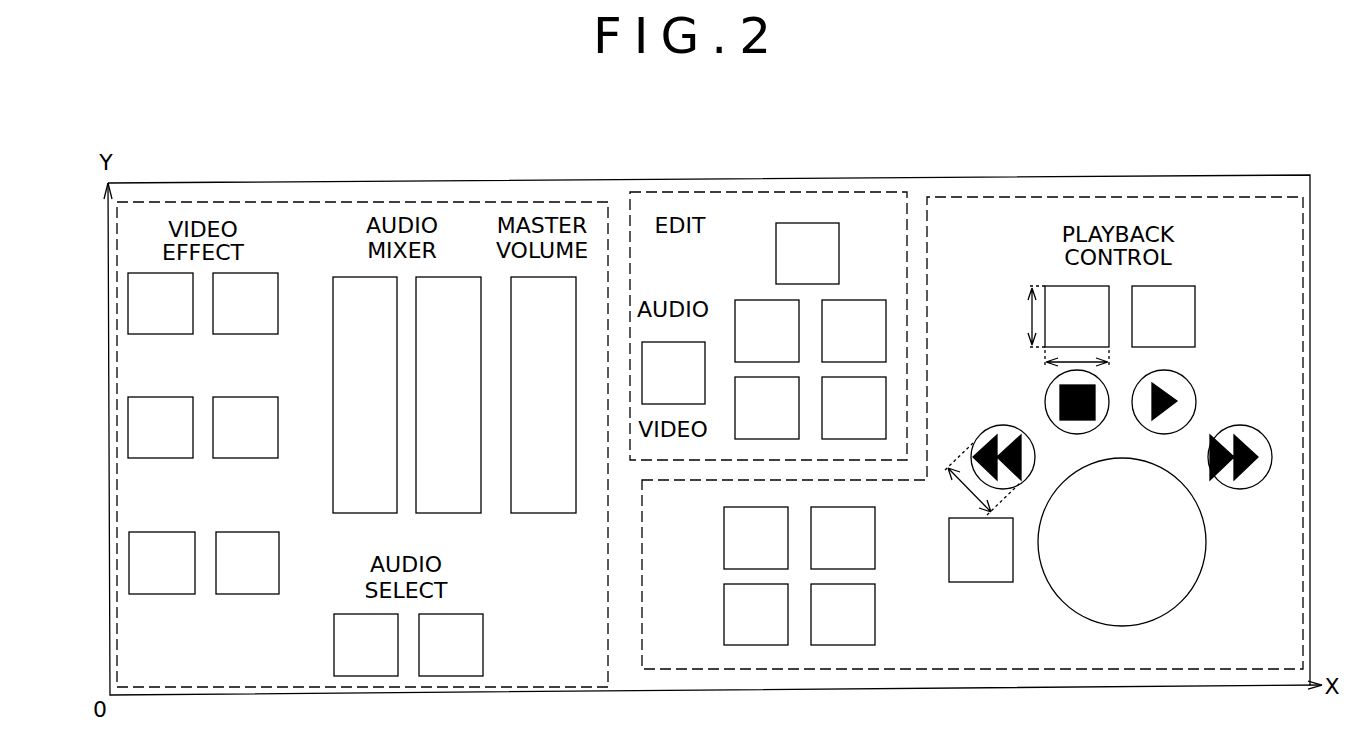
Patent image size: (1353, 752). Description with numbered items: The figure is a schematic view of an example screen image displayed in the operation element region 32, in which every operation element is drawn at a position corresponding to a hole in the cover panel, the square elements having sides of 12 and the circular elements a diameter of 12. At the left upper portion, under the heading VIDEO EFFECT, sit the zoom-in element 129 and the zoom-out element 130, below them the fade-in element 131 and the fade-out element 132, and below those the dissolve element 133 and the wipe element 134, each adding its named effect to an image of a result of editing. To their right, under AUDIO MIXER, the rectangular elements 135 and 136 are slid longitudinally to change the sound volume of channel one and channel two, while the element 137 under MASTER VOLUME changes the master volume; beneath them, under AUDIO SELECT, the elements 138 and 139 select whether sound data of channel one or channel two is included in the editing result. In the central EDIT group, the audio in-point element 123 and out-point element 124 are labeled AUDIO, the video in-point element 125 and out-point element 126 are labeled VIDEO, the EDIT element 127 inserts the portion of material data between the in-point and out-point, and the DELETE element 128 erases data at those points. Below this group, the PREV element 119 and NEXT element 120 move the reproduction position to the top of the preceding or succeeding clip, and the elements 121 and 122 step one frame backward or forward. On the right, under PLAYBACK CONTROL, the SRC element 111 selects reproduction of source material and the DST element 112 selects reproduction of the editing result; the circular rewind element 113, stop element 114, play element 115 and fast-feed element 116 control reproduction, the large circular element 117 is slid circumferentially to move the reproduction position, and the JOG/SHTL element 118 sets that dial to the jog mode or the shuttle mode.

The operation element region 32 is at (612, 180).
The side length / diameter 12 is at (1045, 362).
The operation element (SRC) 111 is at (1053, 286).
The operation element (DST) 112 is at (1195, 317).
The operation element (REWIND) 113 is at (985, 432).
The operation element (STOP) 114 is at (1100, 423).
The operation element (PLAY) 115 is at (1196, 400).
The operation element (fast feeding) 116 is at (1240, 490).
The operation element (jog/shuttle dial) 117 is at (1198, 592).
The operation element (JOG/SHTL mode button) 118 is at (975, 583).
The operation element (PREV) 119 is at (724, 537).
The operation element (NEXT) 120 is at (875, 537).
The operation element (−1) 121 is at (724, 615).
The operation element (+1) 122 is at (875, 615).
The operation element (audio IN) 123 is at (763, 300).
The operation element (audio OUT) 124 is at (862, 300).
The operation element (video IN) 125 is at (765, 440).
The operation element (video OUT) 126 is at (855, 440).
The operation element (EDIT) 127 is at (810, 223).
The operation element (DELETE) 128 is at (705, 362).
The operation element (ZOOM IN) 129 is at (128, 307).
The operation element (ZOOM OUT) 130 is at (278, 297).
The operation element (FADE IN) 131 is at (128, 431).
The operation element (FADE OUT) 132 is at (278, 422).
The operation element (DISSOLVE) 133 is at (129, 566).
The operation element (WIPE) 134 is at (279, 557).
The operation element (channel 1 volume slider) 135 is at (353, 514).
The operation element (channel 2 volume slider) 136 is at (460, 514).
The operation element (master volume slider) 137 is at (548, 514).
The operation element (CH-1) 138 is at (334, 650).
The operation element (CH-2) 139 is at (483, 651).